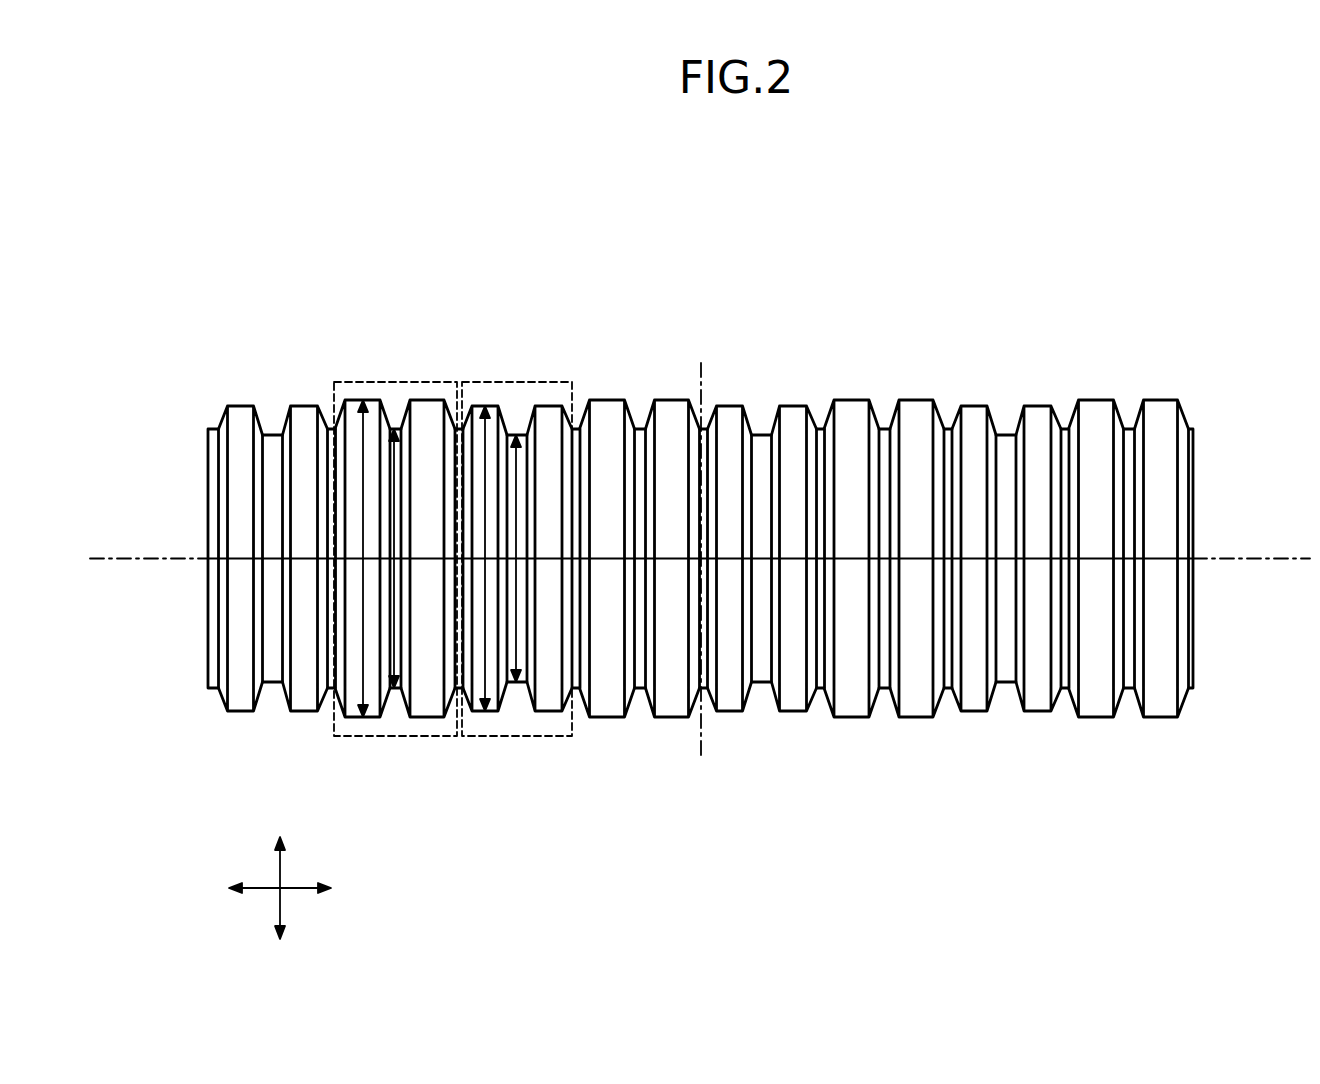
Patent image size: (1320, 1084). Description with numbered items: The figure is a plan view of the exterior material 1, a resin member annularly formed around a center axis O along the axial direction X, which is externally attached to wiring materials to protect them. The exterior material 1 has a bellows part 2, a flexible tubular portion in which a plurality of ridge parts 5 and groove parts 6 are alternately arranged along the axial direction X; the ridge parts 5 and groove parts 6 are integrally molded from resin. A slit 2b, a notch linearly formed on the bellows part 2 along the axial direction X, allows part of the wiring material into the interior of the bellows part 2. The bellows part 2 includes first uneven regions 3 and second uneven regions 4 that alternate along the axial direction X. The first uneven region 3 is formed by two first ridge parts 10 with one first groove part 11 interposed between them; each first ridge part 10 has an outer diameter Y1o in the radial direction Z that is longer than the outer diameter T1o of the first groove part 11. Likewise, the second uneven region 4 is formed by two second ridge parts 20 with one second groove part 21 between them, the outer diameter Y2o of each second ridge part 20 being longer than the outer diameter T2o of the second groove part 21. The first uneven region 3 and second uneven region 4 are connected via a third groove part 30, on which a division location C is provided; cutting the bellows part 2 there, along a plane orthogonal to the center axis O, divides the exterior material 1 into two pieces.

The exterior material 1 is at (1180, 235).
The bellows part 2 is at (1197, 266).
The slit 2b is at (1160, 557).
The first uneven region 3 is at (333, 393).
The second uneven region 4 is at (572, 392).
The ridge part 5 is at (704, 494).
The groove part 6 is at (699, 479).
The first ridge part 10 is at (425, 400).
The first groove part 11 is at (391, 429).
The second ridge part 20 is at (549, 406).
The second groove part 21 is at (516, 435).
The third groove part 30 is at (703, 429).
The center axis O is at (152, 557).
The division location C is at (700, 732).
The outer diameter of first ridge part Y1o is at (363, 662).
The outer diameter of first groove part T1o is at (394, 648).
The outer diameter of second ridge part Y2o is at (485, 662).
The outer diameter of second groove part T2o is at (516, 648).
The radial direction Z is at (280, 903).
The axial direction X is at (298, 890).